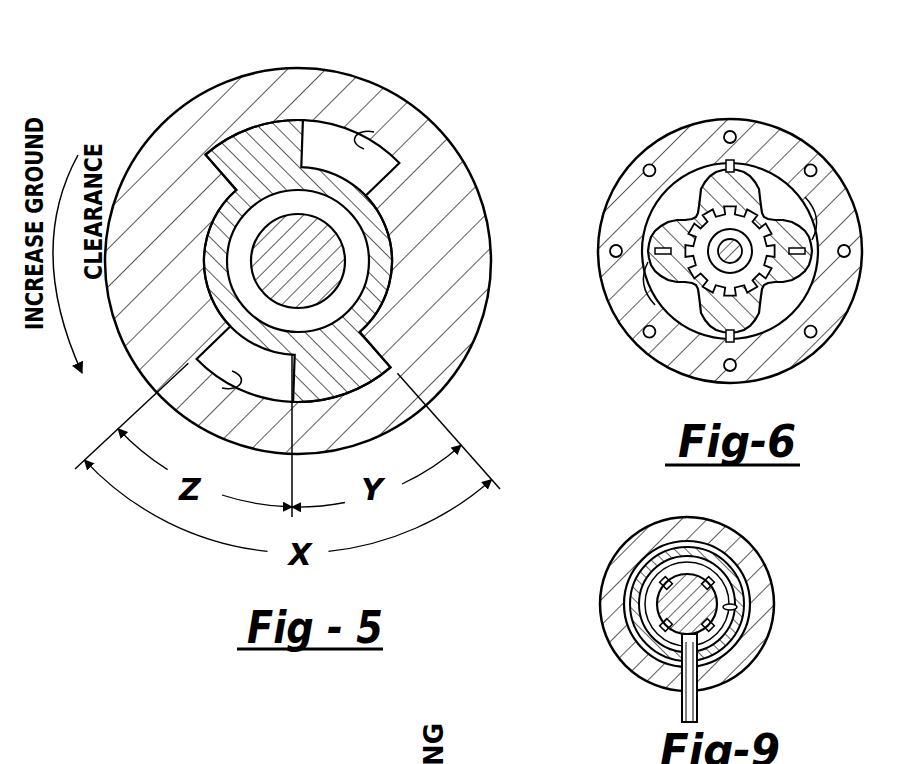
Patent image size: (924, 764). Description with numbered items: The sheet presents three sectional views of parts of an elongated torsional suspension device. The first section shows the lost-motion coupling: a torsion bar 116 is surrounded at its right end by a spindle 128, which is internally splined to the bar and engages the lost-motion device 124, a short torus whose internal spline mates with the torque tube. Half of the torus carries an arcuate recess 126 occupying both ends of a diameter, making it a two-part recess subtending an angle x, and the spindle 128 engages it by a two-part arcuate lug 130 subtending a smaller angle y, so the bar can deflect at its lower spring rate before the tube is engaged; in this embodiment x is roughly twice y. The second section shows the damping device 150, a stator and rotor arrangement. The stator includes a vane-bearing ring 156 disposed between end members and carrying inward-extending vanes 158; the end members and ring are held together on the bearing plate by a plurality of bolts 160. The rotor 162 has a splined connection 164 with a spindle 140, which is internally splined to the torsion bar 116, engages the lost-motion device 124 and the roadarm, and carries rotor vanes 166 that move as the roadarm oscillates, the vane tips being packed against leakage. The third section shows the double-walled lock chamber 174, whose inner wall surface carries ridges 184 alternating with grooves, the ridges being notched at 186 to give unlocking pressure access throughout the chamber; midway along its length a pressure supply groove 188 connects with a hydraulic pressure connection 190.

In FIG. 5, the torsion bar 116 is at (282, 226).
In FIG. 5, the lost-motion device 124 is at (462, 198).
In FIG. 5, the arcuate recess 126 is at (400, 135).
In FIG. 5, the spindle 128 is at (435, 165).
In FIG. 5, the two-part arcuate lug 130 is at (320, 122).
In FIG. 6, the spindle 140 is at (760, 252).
In FIG. 6, the damping device 150 is at (800, 127).
In FIG. 6, the vane-bearing ring 156 is at (652, 326).
In FIG. 6, the vanes 158 is at (787, 215).
In FIG. 6, the bolts 160 is at (724, 134).
In FIG. 6, the rotor 162 is at (655, 288).
In FIG. 6, the splined connection 164 is at (750, 268).
In FIG. 6, the vanes 166 is at (742, 160).
In FIG. 9, the lock chamber 174 is at (722, 586).
In FIG. 9, the ridges 184 is at (640, 612).
In FIG. 9, the notches 186 is at (712, 580).
In FIG. 9, the pressure supply groove 188 is at (740, 607).
In FIG. 9, the hydraulic pressure connection 190 is at (700, 706).